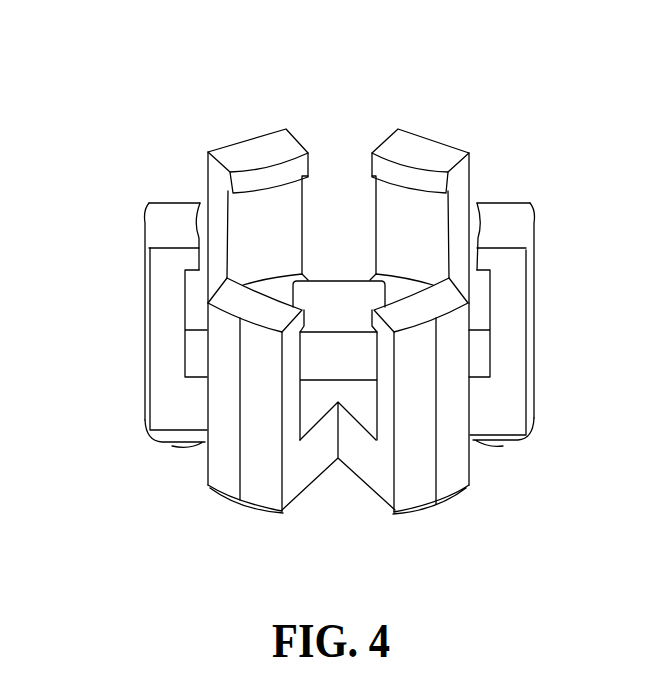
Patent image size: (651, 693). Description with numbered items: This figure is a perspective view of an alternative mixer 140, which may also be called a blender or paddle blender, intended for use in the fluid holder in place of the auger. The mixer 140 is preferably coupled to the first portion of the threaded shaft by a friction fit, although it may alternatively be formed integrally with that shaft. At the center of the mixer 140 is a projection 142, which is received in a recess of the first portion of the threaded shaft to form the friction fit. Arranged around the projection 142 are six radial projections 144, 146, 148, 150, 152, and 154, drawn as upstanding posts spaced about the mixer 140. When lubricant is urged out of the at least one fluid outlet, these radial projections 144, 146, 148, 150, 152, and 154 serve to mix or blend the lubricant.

The mixer 140 is at (138, 70).
The projection 142 is at (337, 308).
The radial projection 144 is at (218, 455).
The radial projection 146 is at (160, 225).
The radial projection 148 is at (256, 148).
The radial projection 150 is at (427, 148).
The radial projection 152 is at (515, 227).
The radial projection 154 is at (455, 460).